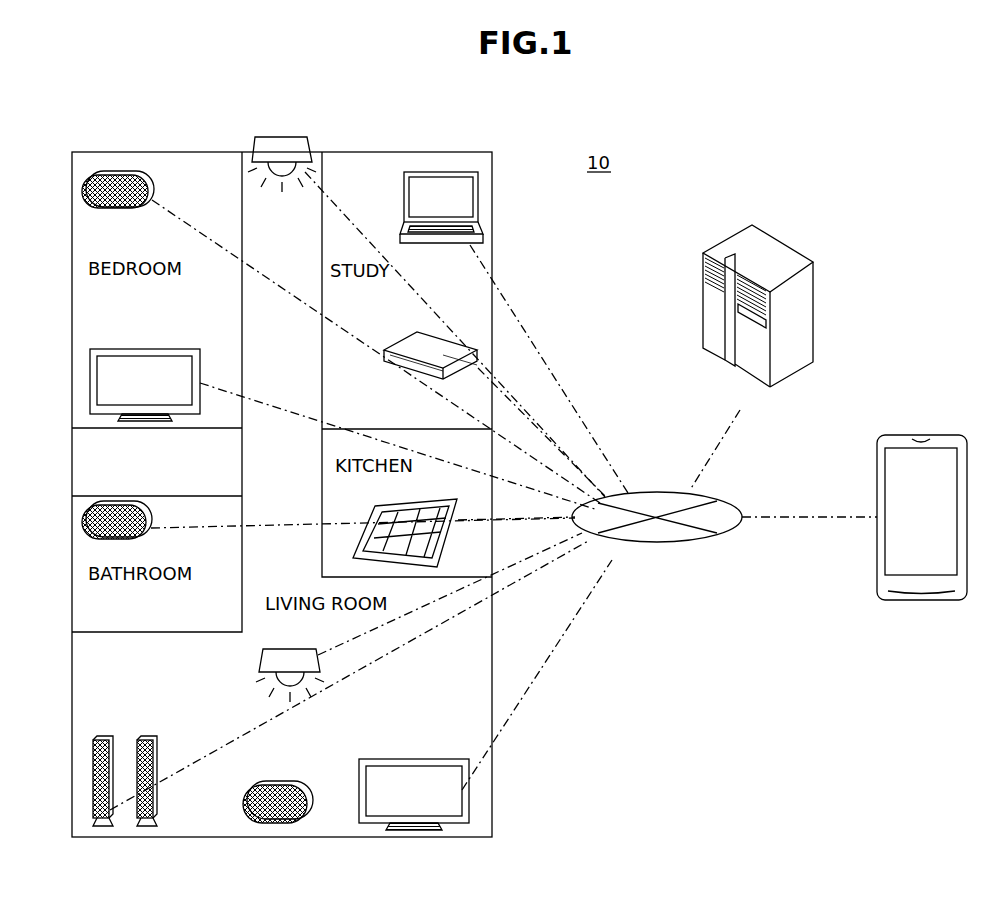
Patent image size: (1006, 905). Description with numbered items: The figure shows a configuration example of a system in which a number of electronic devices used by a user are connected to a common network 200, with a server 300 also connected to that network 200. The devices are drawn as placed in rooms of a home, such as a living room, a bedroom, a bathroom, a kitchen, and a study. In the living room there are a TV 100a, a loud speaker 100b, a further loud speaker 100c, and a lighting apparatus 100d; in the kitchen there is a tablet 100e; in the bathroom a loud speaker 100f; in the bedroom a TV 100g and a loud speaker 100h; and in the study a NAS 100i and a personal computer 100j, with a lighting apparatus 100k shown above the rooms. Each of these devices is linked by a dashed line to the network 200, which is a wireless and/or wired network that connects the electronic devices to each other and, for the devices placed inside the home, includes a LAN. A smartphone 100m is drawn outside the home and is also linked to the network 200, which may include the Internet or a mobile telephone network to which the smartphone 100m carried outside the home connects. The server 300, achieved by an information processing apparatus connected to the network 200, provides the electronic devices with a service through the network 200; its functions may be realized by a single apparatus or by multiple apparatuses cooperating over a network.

The TV 100a is at (410, 757).
The loud speaker 100b is at (283, 781).
The loud speaker 100c is at (103, 737).
The lighting apparatus 100d is at (258, 661).
The tablet 100e is at (396, 504).
The loud speaker 100f is at (80, 518).
The TV 100g is at (145, 348).
The loud speaker 100h is at (156, 190).
The NAS 100i is at (415, 330).
The personal computer 100j is at (402, 181).
The lighting apparatus 100k is at (298, 130).
The smartphone 100m is at (920, 433).
The network 200 is at (663, 543).
The server 300 is at (768, 233).